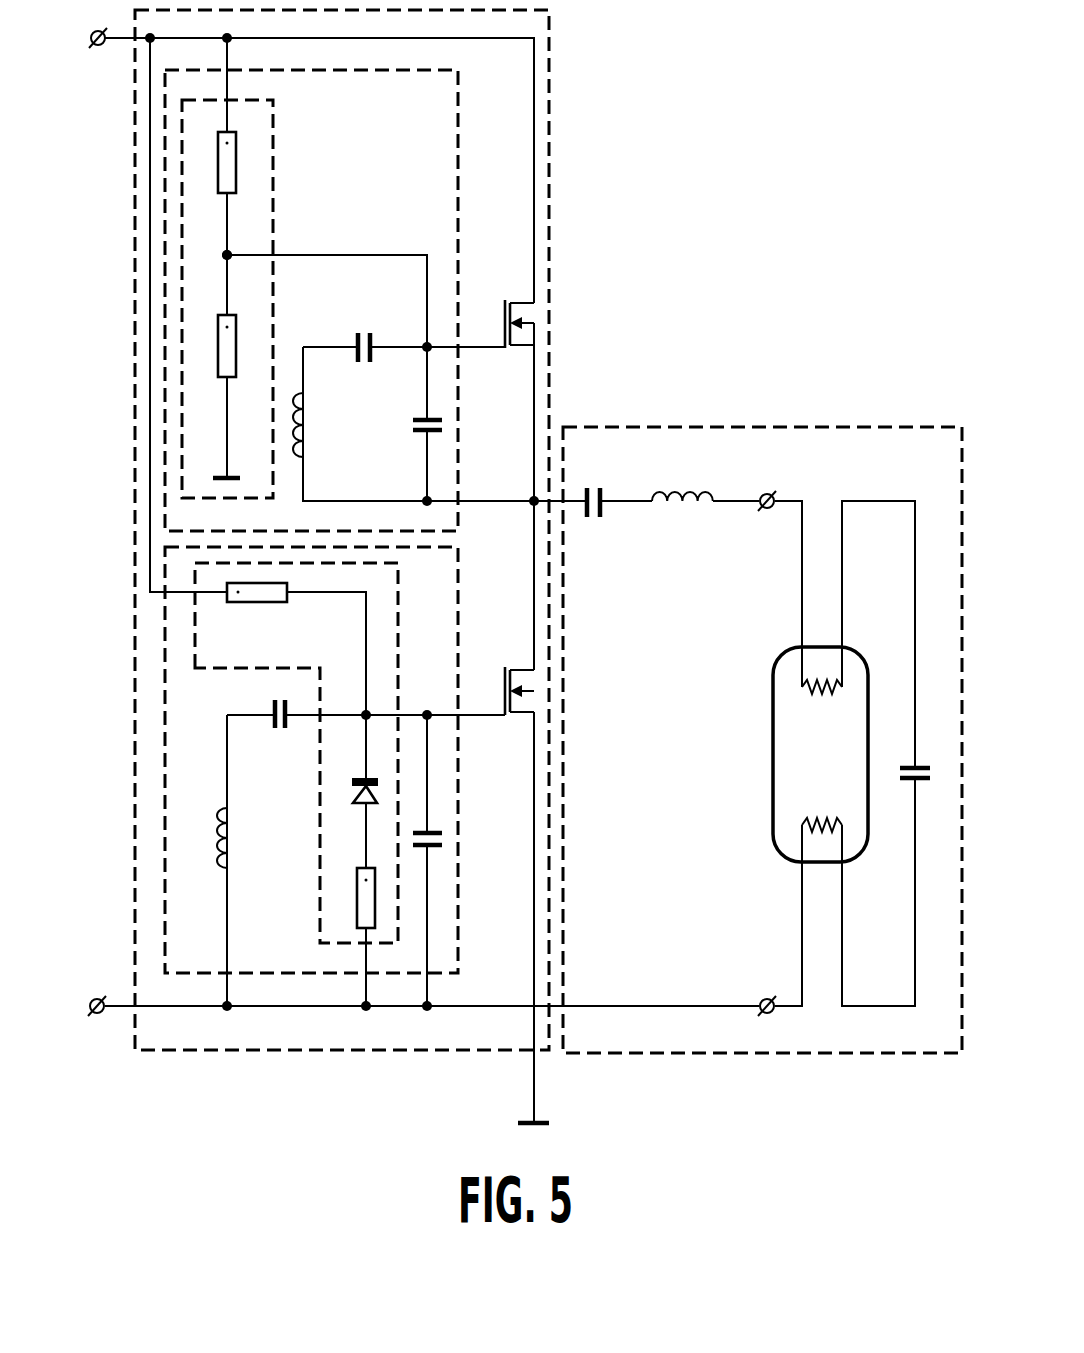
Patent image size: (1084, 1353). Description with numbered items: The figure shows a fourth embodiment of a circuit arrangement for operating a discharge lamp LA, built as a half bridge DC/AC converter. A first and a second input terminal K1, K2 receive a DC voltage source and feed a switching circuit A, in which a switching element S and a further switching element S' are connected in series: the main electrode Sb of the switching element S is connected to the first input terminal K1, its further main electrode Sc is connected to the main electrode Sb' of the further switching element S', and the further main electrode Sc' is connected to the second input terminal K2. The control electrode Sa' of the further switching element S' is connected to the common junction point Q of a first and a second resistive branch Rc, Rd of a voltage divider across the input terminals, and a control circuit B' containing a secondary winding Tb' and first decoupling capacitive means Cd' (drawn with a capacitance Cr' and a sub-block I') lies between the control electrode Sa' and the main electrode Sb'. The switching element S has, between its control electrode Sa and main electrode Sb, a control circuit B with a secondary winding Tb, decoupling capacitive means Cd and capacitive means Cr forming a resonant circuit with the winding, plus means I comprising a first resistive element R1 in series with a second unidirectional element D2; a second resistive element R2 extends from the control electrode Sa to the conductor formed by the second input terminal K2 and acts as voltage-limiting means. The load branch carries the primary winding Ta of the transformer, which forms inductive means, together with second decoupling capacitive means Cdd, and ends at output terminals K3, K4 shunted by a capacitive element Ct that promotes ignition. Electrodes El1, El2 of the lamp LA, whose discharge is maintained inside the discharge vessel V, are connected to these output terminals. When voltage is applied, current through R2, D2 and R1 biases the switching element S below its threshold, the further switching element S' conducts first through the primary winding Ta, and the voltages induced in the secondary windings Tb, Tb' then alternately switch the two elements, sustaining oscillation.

The switching circuit A is at (383, 1053).
The control circuit B is at (333, 760).
The control circuit B' is at (337, 300).
The means I is at (296, 753).
The further drive circuit I' is at (250, 299).
The first input terminal K1 is at (96, 996).
The second input terminal K2 is at (97, 47).
The output terminal K3 is at (764, 997).
The output terminal K4 is at (767, 510).
The first resistive branch Rc is at (236, 172).
The second resistive branch Rd is at (236, 328).
The common junction point Q is at (225, 256).
The second resistive element R2 is at (253, 603).
The first resistive element R1 is at (355, 905).
The first decoupling capacitive means Cd' is at (372, 318).
The capacitor Cr' is at (399, 421).
The decoupling capacitive means Cd is at (236, 703).
The capacitive means Cr is at (456, 850).
The second decoupling capacitive means Cdd is at (595, 520).
The capacitive element Ct is at (906, 762).
The secondary winding Tb' is at (330, 435).
The secondary winding Tb is at (251, 852).
The primary winding Ta is at (680, 505).
The second unidirectional element D2 is at (352, 797).
The further switching element S' is at (560, 308).
The control electrode Sa' is at (486, 300).
The main electrode Sb' is at (503, 383).
The further main electrode Sc' is at (503, 249).
The switching element S is at (553, 691).
The control electrode Sa is at (486, 677).
The main electrode Sb is at (503, 757).
The further main electrode Sc is at (503, 625).
The discharge lamp LA is at (753, 754).
The discharge vessel V is at (773, 773).
The electrode El1 is at (802, 672).
The electrode El2 is at (767, 829).